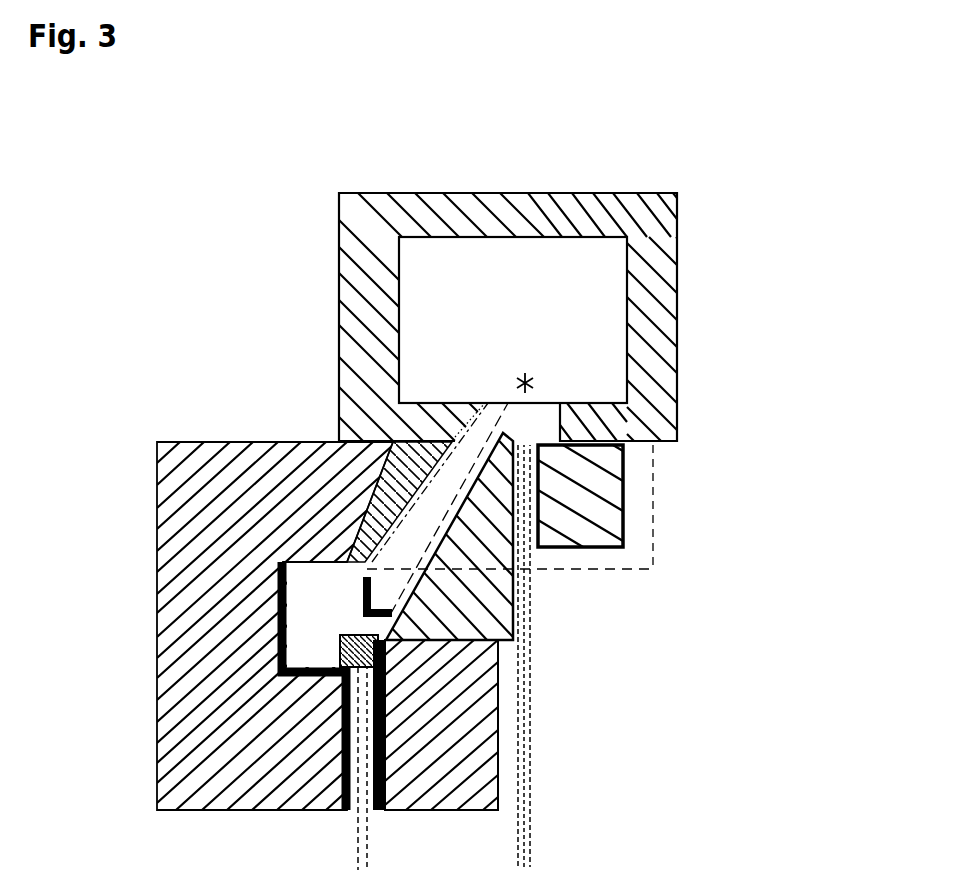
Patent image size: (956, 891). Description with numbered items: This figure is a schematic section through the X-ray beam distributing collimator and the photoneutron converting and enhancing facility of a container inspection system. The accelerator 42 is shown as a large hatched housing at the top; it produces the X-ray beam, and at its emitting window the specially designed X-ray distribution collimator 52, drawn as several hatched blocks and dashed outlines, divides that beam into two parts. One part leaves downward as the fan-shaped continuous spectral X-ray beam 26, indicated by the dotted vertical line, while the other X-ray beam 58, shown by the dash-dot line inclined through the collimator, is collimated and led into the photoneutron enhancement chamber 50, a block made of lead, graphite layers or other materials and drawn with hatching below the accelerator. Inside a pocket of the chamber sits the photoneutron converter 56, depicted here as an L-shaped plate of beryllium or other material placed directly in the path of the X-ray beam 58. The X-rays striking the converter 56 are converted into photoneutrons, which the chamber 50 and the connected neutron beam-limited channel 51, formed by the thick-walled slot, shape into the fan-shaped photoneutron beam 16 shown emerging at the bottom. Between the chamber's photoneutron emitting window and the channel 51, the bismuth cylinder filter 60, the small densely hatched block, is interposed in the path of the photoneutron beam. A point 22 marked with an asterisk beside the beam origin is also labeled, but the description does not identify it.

The fan-shaped photoneutron beam 16 is at (353, 843).
The axis point 22 is at (537, 364).
The fan-shaped continuous spectral X-ray beam 26 is at (530, 827).
The accelerator 42 is at (556, 228).
The photoneutron enhancement chamber 50 is at (177, 480).
The neutron beam-limited channel 51 is at (295, 808).
The X-ray distribution collimator 52 is at (370, 500).
The photoneutron converter 56 is at (362, 592).
The X-ray beam 58 is at (493, 420).
The bismuth cylinder filter 60 is at (346, 636).